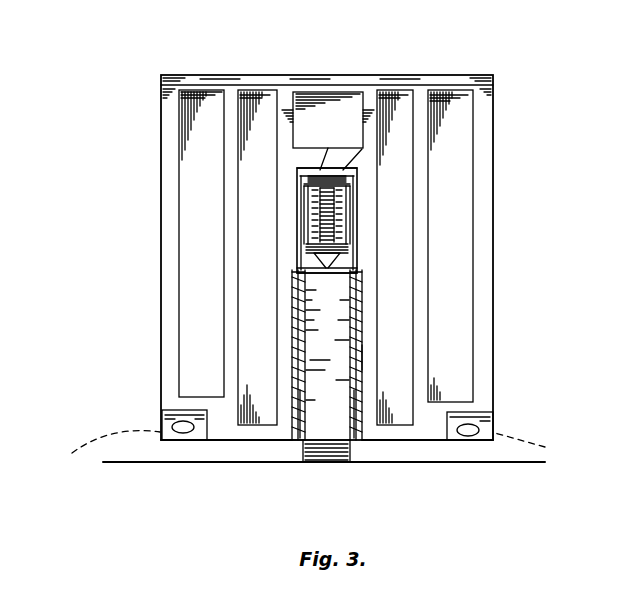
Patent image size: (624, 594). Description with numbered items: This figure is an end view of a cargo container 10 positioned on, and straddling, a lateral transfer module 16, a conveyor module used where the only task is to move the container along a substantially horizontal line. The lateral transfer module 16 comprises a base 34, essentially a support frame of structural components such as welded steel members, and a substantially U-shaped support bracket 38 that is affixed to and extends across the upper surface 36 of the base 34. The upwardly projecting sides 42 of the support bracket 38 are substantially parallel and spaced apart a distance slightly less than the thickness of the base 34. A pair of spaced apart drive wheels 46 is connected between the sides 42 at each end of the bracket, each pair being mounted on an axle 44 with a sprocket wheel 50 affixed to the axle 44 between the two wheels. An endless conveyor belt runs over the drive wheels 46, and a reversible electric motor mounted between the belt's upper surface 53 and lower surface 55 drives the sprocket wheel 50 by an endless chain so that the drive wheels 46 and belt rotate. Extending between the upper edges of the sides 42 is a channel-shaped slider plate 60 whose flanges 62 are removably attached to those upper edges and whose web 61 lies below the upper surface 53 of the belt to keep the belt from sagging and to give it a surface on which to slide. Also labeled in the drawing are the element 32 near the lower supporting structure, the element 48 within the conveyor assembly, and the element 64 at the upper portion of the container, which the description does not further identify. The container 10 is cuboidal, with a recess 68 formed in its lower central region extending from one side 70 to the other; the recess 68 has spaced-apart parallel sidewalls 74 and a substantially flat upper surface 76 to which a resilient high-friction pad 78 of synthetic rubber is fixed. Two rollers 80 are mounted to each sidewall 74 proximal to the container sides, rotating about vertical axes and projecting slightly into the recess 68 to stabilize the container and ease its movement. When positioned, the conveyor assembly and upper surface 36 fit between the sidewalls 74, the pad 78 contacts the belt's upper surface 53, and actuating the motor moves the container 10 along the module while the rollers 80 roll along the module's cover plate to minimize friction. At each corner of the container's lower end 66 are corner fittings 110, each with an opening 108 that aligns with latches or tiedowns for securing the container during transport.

The cargo container 10 is at (142, 87).
The lateral transfer module 16 is at (228, 467).
The base 32 is at (126, 455).
The base 34 is at (357, 357).
The upper surface 36 is at (357, 292).
The U-shaped support bracket 38 is at (296, 209).
The sides 42 is at (300, 232).
The axle 44 is at (355, 218).
The drive wheels 46 is at (300, 290).
The seal 48 is at (300, 246).
The sprocket wheel 50 is at (356, 262).
The upper surface of conveyor belt 53 is at (323, 173).
The lower surface of conveyor belt 55 is at (300, 270).
The slider plate 60 is at (352, 182).
The web 61 is at (355, 210).
The flange 62 is at (296, 180).
The housing top 64 is at (490, 76).
The lower end 66 is at (265, 443).
The recess 68 is at (335, 360).
The side of container 70 is at (212, 171).
The sidewalls 74 is at (303, 428).
The upper surface of recess 76 is at (337, 170).
The resilient high-friction pad 78 is at (305, 172).
The rollers 80 is at (300, 385).
The opening 108 is at (164, 433).
The corner fittings 110 is at (170, 412).